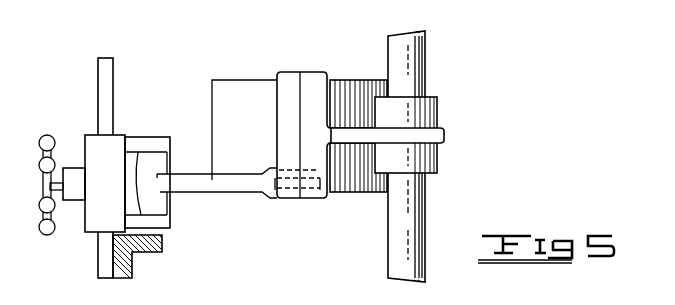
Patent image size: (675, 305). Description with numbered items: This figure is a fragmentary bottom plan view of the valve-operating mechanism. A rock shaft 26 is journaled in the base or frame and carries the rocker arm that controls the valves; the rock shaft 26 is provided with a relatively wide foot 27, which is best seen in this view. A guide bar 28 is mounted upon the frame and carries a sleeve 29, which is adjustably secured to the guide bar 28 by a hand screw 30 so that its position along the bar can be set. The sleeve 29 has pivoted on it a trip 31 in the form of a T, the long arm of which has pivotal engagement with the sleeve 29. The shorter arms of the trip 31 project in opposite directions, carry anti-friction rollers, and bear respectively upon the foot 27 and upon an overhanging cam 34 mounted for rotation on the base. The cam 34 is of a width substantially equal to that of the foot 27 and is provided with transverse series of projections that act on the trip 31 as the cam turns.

The rock shaft 26 is at (413, 63).
The foot 27 is at (292, 78).
The guide bar 28 is at (110, 115).
The sleeve 29 is at (108, 143).
The hand screw 30 is at (43, 177).
The trip 31 is at (205, 183).
The cam 34 is at (255, 98).